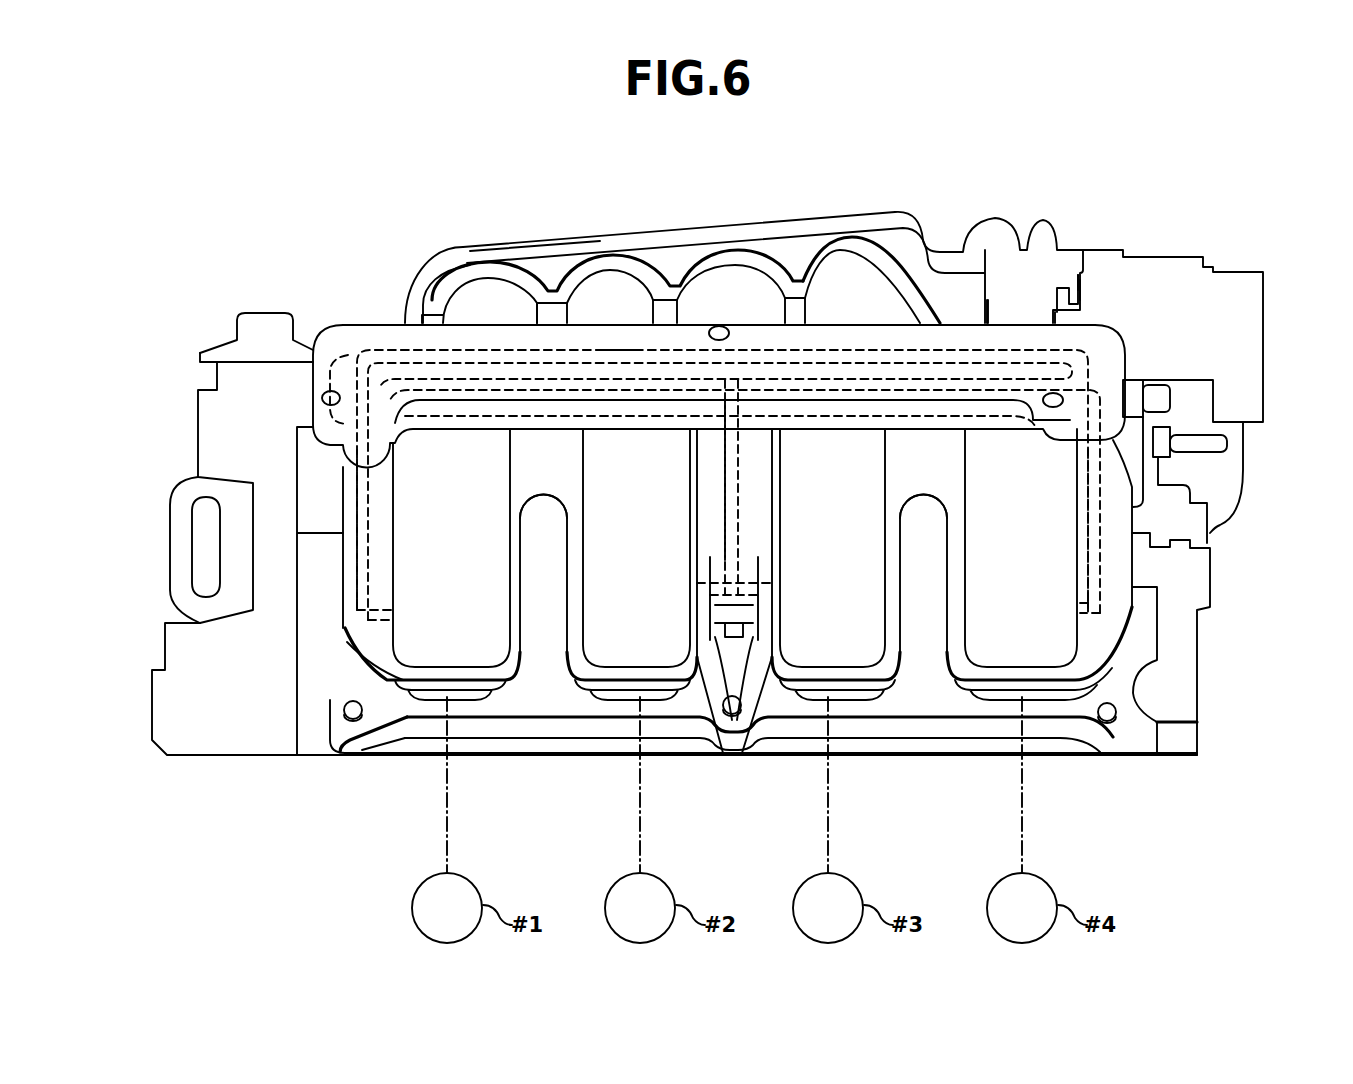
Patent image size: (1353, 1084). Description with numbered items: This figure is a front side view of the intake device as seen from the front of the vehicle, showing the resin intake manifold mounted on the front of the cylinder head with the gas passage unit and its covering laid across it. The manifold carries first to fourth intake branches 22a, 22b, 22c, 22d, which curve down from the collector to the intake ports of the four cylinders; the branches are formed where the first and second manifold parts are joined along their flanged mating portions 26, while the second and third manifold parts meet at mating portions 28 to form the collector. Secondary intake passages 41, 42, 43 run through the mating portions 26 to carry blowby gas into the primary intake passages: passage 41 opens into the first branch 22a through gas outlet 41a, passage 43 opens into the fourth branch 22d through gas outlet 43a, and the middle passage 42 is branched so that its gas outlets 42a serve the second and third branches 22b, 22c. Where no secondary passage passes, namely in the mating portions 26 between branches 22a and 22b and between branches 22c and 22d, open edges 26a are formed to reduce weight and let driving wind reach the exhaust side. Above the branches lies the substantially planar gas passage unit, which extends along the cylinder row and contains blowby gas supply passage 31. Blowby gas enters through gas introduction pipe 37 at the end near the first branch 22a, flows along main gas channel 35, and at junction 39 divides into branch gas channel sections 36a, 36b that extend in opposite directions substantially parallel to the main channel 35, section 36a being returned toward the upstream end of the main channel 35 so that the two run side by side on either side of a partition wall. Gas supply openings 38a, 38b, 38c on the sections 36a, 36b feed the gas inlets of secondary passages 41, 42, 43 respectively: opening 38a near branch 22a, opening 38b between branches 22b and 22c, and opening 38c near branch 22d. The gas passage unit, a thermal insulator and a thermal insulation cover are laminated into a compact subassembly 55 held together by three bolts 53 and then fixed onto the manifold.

The first intake branch 22a is at (470, 647).
The second intake branch 22b is at (617, 650).
The third intake branch 22c is at (815, 638).
The fourth intake branch 22d is at (1002, 635).
The mating portions 26 is at (706, 473).
The open edges 26a is at (523, 620).
The mating portions 28 is at (767, 530).
The blowby gas supply passage 31 is at (545, 333).
The main gas channel 35 is at (603, 357).
The branch gas channel section 36a is at (674, 378).
The branch gas channel section 36b is at (878, 380).
The gas introduction pipe 37 is at (340, 326).
The gas supply opening 38a is at (363, 413).
The gas supply opening 38b is at (742, 390).
The gas supply opening 38c is at (1095, 388).
The junction 39 is at (790, 228).
The secondary intake passage 41 is at (370, 547).
The gas outlet 41a is at (383, 623).
The secondary intake passage 42 is at (730, 513).
The gas outlets 42a is at (730, 755).
The secondary intake passage 43 is at (1088, 527).
The gas outlet 43a is at (1087, 613).
The bolts 53 is at (720, 326).
The subassembly 55 is at (1013, 323).